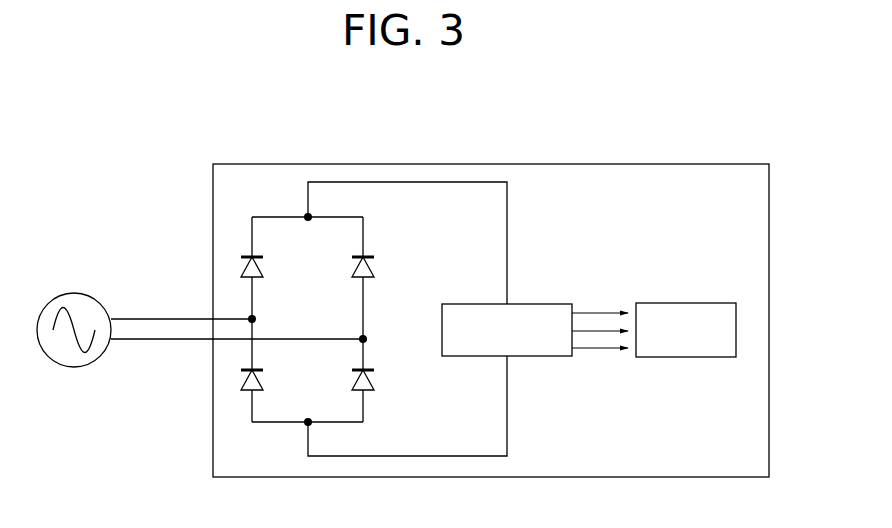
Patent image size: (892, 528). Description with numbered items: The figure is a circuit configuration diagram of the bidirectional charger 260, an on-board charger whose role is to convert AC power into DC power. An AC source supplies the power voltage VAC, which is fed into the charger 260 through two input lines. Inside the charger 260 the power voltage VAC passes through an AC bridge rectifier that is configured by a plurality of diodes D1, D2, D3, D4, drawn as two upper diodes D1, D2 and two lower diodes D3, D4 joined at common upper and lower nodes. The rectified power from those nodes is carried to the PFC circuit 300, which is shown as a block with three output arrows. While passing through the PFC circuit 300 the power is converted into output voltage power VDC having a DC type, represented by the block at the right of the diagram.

The bidirectional charger 260 is at (665, 164).
The PFC circuit 300 is at (542, 303).
The diode D1 is at (270, 265).
The diode D2 is at (381, 265).
The diode D3 is at (270, 378).
The diode D4 is at (381, 378).
The power voltage VAC is at (74, 350).
The output voltage power VDC is at (686, 330).